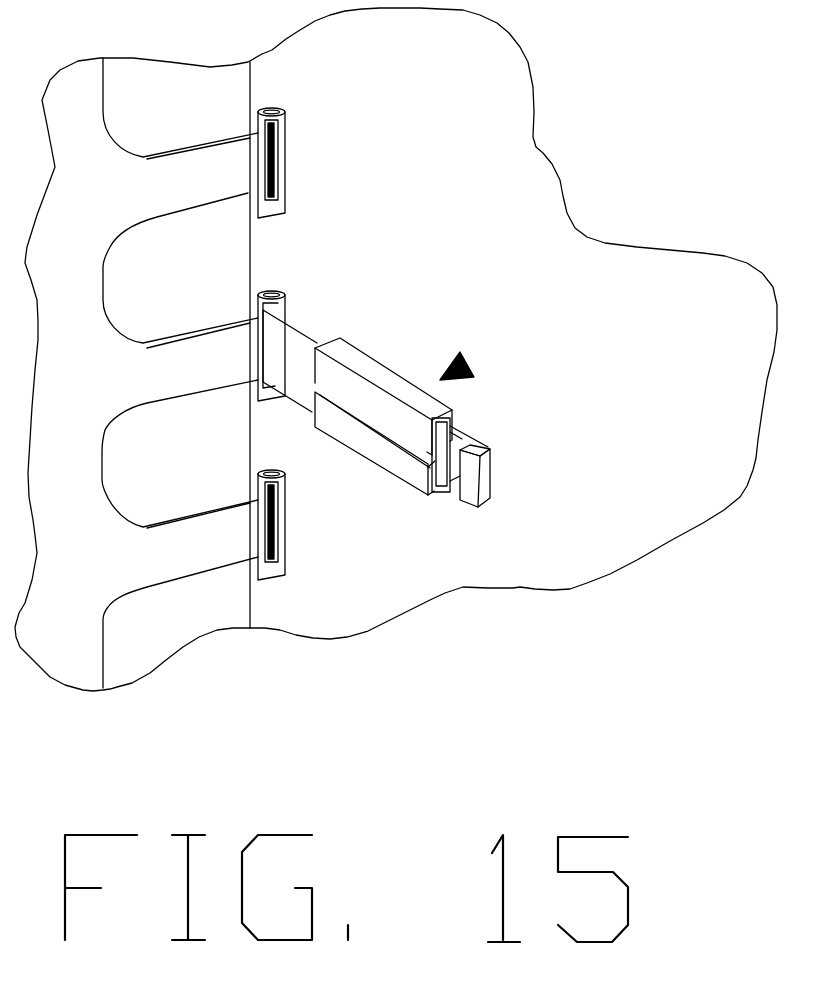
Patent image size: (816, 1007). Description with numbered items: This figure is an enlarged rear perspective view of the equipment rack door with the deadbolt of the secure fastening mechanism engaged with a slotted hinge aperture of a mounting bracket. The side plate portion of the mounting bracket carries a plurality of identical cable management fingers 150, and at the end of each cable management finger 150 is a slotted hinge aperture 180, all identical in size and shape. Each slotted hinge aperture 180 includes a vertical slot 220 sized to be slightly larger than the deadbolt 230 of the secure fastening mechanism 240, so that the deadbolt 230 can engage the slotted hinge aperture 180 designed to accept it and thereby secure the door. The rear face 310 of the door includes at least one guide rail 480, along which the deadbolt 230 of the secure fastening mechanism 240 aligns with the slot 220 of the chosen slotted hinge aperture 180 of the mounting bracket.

The cable management finger 150 is at (197, 177).
The slotted hinge aperture 180 is at (283, 153).
The vertical slot 220 is at (275, 181).
The deadbolt 230 is at (287, 358).
The secure fastening mechanism 240 is at (470, 358).
The rear face of the door 310 is at (695, 490).
The guide rail 480 is at (357, 442).